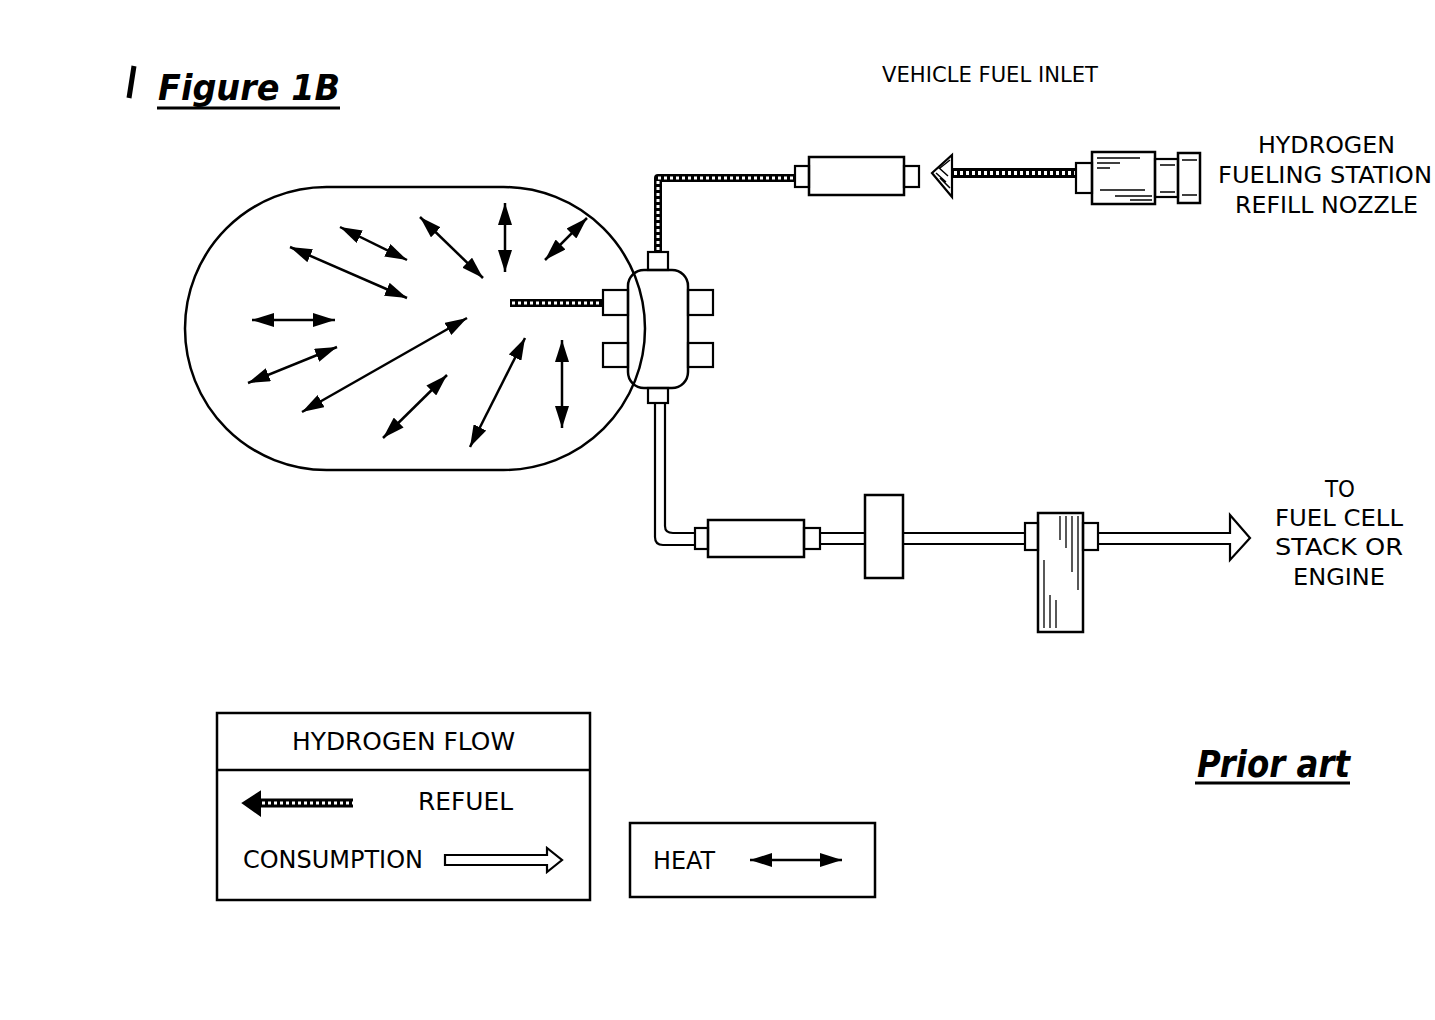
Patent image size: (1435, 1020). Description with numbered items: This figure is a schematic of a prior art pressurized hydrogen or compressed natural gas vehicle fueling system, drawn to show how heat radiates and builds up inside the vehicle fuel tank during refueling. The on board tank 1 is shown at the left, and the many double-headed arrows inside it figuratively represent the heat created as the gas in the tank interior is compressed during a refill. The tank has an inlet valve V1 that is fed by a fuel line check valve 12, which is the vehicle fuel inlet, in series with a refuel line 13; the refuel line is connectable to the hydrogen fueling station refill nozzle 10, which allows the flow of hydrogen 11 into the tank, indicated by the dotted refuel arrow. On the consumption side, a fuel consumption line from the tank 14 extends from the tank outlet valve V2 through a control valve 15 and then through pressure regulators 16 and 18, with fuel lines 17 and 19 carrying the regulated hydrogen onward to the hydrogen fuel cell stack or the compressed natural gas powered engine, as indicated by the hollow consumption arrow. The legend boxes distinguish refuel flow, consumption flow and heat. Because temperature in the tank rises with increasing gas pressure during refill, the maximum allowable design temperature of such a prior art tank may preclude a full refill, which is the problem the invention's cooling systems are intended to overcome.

The on board tank 1 is at (207, 404).
The station refill nozzle 10 is at (1125, 204).
The flow of hydrogen 11 is at (1005, 183).
The fuel line check valve 12 is at (857, 157).
The refuel line 13 is at (718, 178).
The fuel consumption line from the tank 14 is at (655, 522).
The control valve 15 is at (757, 557).
The pressure regulator 16 is at (885, 578).
The fuel line 17 is at (957, 533).
The pressure regulator 18 is at (1059, 632).
The fuel line 19 is at (1173, 533).
The inlet valve V1 is at (700, 290).
The tank outlet valve V2 is at (700, 367).